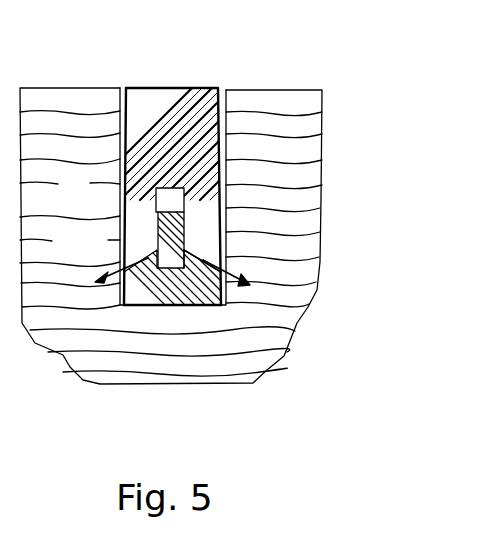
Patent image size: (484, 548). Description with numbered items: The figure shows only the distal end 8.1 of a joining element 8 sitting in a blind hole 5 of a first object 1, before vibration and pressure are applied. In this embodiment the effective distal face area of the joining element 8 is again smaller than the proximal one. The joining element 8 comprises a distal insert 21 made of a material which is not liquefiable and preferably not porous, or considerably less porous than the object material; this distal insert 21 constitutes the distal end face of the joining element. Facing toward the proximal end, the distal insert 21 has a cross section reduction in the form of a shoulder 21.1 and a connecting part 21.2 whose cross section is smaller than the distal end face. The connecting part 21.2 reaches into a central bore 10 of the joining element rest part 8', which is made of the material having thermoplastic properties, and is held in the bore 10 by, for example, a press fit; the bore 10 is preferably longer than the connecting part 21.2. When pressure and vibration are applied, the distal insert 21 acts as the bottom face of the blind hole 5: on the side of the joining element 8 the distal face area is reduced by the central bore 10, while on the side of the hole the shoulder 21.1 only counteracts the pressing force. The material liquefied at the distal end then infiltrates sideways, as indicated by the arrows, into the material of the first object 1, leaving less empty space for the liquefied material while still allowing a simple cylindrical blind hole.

The first object 1 is at (303, 222).
The blind hole 5 is at (222, 170).
The joining element 8 is at (282, 159).
The joining element rest part 8' is at (282, 122).
The distal end 8.1 is at (165, 306).
The central bore 10 is at (167, 201).
The distal insert 21 is at (137, 306).
The shoulder 21.1 is at (195, 306).
The connecting part 21.2 is at (173, 245).